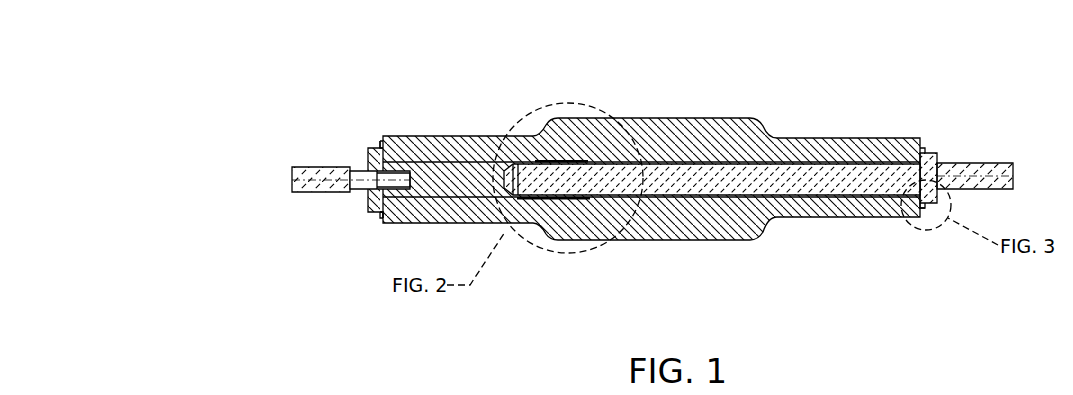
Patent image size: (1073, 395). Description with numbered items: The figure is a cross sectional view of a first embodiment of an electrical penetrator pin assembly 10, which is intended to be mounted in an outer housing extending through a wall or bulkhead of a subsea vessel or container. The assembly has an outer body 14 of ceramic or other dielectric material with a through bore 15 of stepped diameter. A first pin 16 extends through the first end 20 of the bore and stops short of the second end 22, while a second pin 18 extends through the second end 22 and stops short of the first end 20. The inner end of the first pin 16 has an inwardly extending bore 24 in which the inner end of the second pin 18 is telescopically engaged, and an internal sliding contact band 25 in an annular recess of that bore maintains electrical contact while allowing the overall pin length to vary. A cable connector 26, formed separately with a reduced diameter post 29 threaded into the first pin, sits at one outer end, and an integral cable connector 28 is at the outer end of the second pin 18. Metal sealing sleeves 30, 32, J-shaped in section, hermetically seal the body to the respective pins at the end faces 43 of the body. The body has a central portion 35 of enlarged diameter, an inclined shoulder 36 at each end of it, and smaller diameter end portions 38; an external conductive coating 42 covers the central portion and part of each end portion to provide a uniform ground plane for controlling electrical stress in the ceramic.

The electrical penetrator pin assembly 10 is at (806, 90).
The outer body 14 is at (658, 133).
The through bore 15 is at (483, 153).
The first pin 16 is at (423, 160).
The second pin 18 is at (838, 172).
The first end 20 is at (368, 145).
The second end 22 is at (940, 150).
The bore 24 is at (515, 202).
The internal sliding contact band 25 is at (558, 155).
The cable connector 26 is at (308, 190).
The cable connector 28 is at (985, 175).
The reduced diameter post 29 is at (358, 185).
The metal sealing sleeve 30 is at (373, 213).
The metal sealing sleeve 32 is at (932, 203).
The central portion 35 is at (728, 117).
The inclined shoulder 36 is at (775, 128).
The end portions 38 is at (457, 135).
The external conductive coating 42 is at (700, 243).
The end faces 43 is at (380, 137).